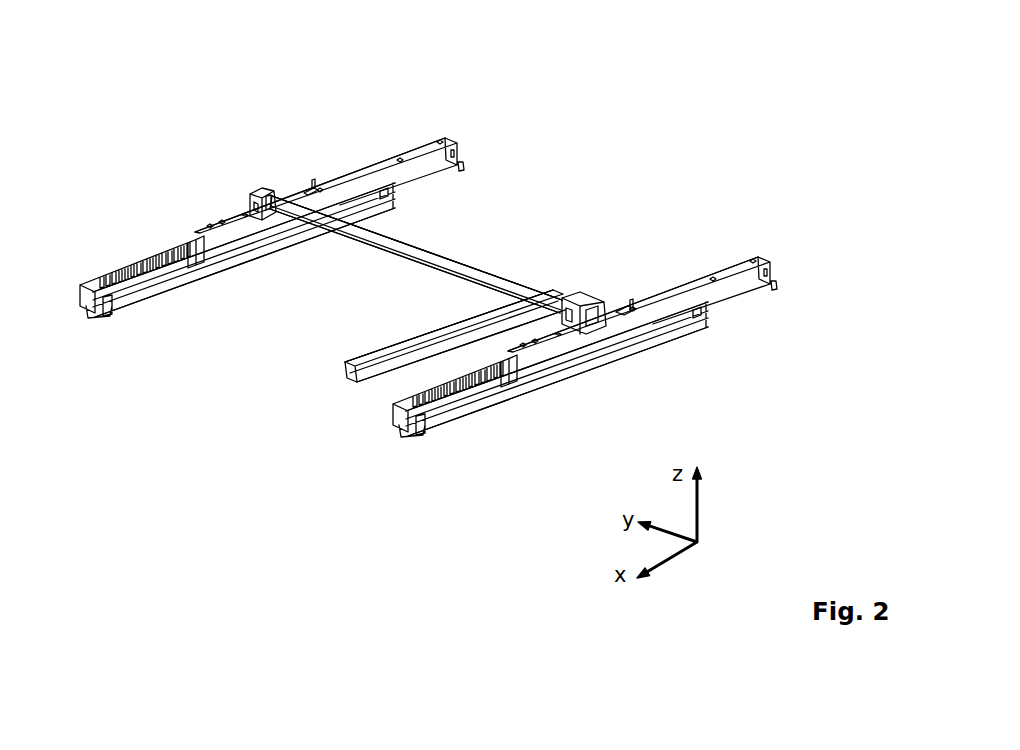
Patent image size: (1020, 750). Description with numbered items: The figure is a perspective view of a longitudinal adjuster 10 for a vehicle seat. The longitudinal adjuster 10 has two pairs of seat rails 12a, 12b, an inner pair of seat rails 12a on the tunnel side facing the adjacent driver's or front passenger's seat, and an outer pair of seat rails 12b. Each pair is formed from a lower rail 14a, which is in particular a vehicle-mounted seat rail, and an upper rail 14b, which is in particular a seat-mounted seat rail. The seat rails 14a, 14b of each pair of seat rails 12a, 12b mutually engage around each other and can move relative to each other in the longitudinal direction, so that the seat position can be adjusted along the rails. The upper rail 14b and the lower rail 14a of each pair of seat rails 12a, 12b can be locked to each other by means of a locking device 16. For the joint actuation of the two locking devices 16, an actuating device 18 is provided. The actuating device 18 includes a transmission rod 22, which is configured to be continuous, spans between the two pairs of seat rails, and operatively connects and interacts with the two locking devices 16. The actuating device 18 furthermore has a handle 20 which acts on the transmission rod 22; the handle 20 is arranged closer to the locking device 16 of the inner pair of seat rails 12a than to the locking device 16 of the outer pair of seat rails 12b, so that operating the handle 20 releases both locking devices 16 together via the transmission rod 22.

The longitudinal adjuster 10 is at (637, 143).
The inner pair of seat rails 12a is at (350, 449).
The outer pair of seat rails 12b is at (99, 355).
The lower rail 14a is at (113, 286).
The upper rail 14b is at (374, 172).
The locking device 16 is at (306, 188).
The actuating device 18 is at (274, 354).
The handle 20 is at (407, 343).
The transmission rod 22 is at (428, 262).